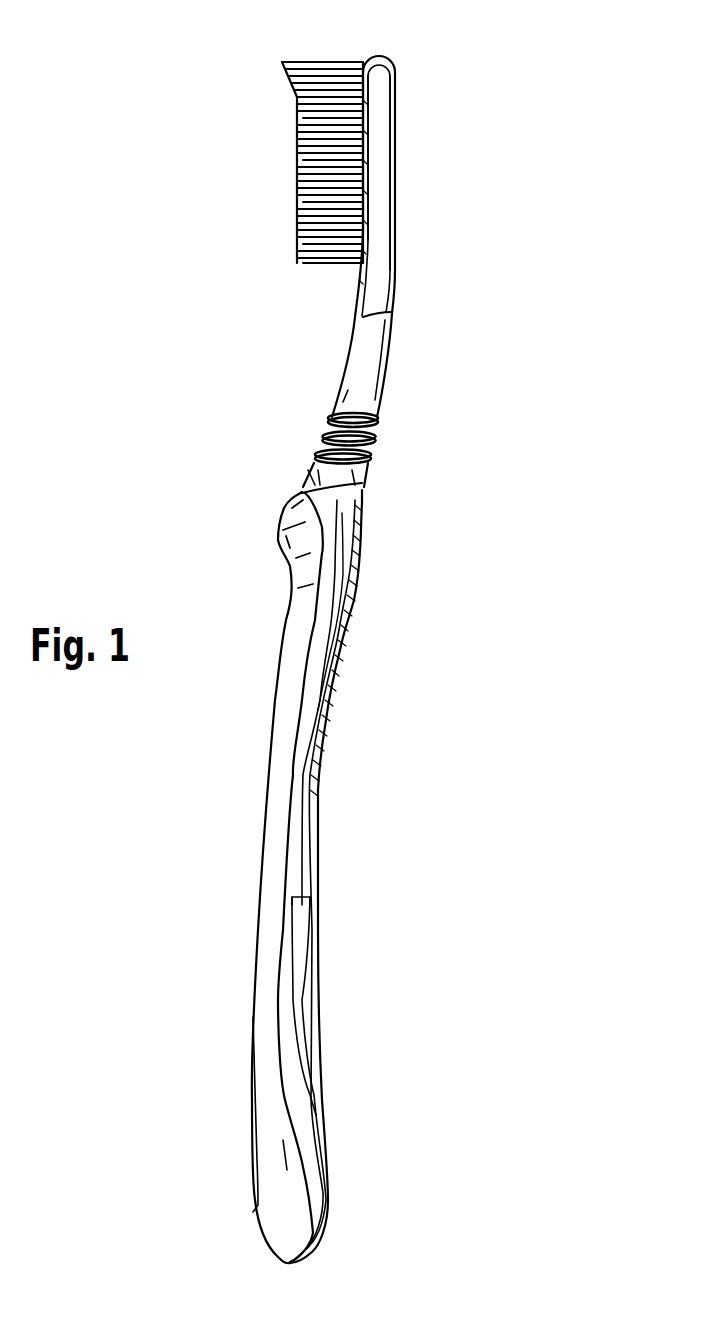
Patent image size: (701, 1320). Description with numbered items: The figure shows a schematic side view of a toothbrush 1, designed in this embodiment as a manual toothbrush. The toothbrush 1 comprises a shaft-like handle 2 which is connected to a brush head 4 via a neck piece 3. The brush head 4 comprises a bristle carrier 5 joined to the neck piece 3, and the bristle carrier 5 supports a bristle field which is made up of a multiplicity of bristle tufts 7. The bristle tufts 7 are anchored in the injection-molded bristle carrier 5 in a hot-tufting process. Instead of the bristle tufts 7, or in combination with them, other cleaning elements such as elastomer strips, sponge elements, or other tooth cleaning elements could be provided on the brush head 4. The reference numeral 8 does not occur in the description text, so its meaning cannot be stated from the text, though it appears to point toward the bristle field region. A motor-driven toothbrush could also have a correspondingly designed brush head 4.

The toothbrush 1 is at (585, 183).
The handle 2 is at (303, 773).
The neck piece 3 is at (376, 369).
The brush head 4 is at (413, 68).
The bristle carrier 5 is at (377, 171).
The bristle tufts 7 is at (318, 68).
The bristle field 8 is at (276, 167).